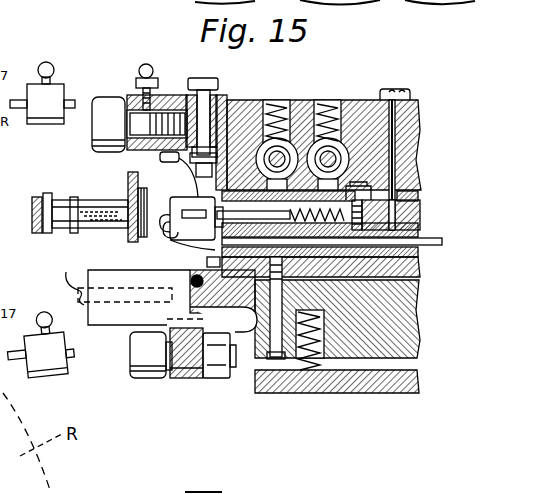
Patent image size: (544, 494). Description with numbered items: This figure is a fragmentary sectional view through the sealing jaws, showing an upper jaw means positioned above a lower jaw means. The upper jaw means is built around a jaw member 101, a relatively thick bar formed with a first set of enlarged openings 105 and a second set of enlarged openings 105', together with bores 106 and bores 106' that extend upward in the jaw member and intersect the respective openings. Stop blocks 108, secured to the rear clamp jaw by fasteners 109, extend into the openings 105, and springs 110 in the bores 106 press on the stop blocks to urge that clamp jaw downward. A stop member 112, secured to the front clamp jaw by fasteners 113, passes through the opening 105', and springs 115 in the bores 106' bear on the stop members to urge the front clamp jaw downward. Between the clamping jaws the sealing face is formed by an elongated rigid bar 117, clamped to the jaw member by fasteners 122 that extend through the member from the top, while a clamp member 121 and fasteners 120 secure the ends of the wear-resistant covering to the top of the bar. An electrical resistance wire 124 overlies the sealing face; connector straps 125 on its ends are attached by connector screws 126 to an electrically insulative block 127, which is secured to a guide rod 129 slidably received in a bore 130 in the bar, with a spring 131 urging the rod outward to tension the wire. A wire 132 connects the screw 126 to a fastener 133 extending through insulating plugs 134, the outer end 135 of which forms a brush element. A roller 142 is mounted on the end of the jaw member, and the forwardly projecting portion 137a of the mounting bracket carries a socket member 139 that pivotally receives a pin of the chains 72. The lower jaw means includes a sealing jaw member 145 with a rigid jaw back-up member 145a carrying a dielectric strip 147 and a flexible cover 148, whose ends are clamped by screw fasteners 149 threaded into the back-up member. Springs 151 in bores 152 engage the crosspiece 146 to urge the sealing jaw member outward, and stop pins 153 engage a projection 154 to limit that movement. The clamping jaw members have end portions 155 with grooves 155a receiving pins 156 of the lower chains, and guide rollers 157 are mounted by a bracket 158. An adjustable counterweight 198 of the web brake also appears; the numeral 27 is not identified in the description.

The adjustable counterweight 198 is at (57, 88).
The roller 142 is at (105, 110).
The insulating plugs 134 is at (187, 97).
The outer end 135 is at (209, 84).
The fastener 133 is at (219, 96).
The guide rod 129 is at (190, 174).
The jaw member 101 is at (342, 143).
The first set of enlarged openings 105 is at (356, 95).
The second set of enlarged openings 105' is at (266, 87).
The springs 115 is at (290, 126).
The bores 106 is at (300, 114).
The bores 106' is at (295, 111).
The fasteners 109 is at (301, 126).
The springs 110 is at (323, 108).
The bolt 27 is at (411, 90).
The fasteners 122 is at (396, 128).
The fasteners 120 is at (386, 185).
The stop blocks 108 is at (373, 141).
The stop member 112 is at (235, 134).
The elongated rigid bar 117 is at (349, 193).
The clamp member 121 is at (420, 196).
The spring 131 is at (354, 184).
The wire 132 is at (148, 156).
The bore 130 is at (243, 205).
The fasteners 113 is at (279, 180).
The electrical resistance wire 124 is at (441, 241).
The flexible cover 148 is at (421, 250).
The dielectric strip 147 is at (421, 266).
The sealing jaw member 145 is at (369, 338).
The jaw back-up member 145a is at (337, 270).
The crosspiece 146 is at (366, 382).
The bores 152 is at (319, 338).
The springs 151 is at (308, 366).
The stop pins 153 is at (192, 301).
The projection 154 is at (208, 307).
The end portions 155 is at (124, 309).
The grooves 155a is at (142, 305).
The pins 156 is at (63, 283).
The guide rollers 157 is at (152, 380).
The bracket 158 is at (190, 379).
The screw fasteners 149 is at (258, 339).
The forwardly projecting portion 137a is at (128, 184).
The electrically insulative block 127 is at (164, 207).
The chains 72 is at (78, 212).
The socket member 139 is at (100, 220).
The connector straps 125 is at (178, 234).
The connector screws 126 is at (180, 241).